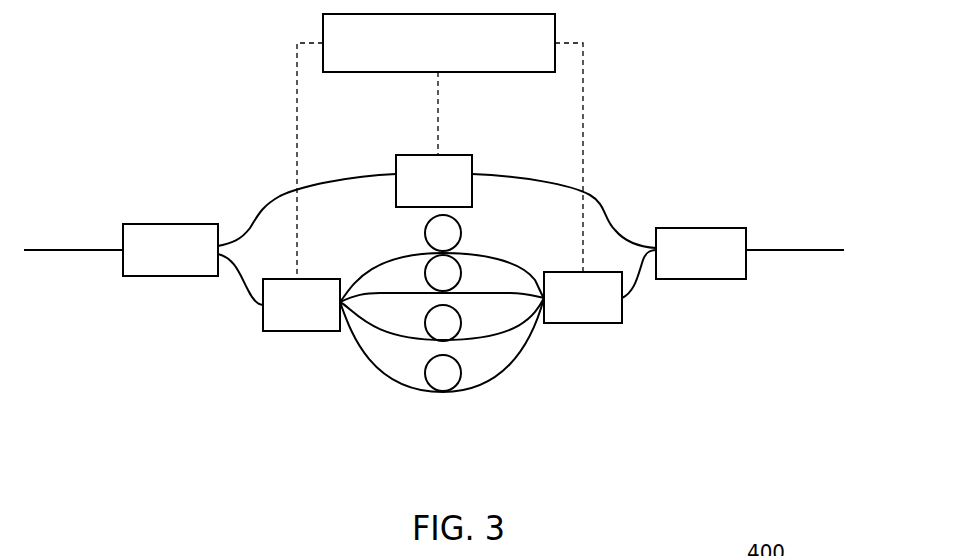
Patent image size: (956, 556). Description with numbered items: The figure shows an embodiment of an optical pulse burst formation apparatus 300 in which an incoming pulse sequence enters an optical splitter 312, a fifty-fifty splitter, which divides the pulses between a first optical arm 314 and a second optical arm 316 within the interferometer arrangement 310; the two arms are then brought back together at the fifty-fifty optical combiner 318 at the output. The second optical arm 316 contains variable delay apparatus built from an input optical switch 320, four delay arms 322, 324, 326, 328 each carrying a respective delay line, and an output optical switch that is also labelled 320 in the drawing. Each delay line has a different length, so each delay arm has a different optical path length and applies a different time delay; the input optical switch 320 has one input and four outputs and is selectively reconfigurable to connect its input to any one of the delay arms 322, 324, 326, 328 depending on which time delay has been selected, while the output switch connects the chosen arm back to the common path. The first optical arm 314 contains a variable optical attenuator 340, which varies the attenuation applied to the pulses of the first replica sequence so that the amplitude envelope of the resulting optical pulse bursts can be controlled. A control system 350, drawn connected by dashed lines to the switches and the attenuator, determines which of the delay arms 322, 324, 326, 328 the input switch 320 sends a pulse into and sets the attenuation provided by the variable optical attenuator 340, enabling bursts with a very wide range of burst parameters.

The optical pulse burst formation apparatus 300 is at (196, 392).
The interferometer 310 is at (228, 155).
The optical splitter 312 is at (154, 276).
The first optical arm 314 is at (505, 166).
The second optical arm 316 is at (362, 414).
The second 50:50 coupler 318 is at (693, 271).
The input optical switch 320 is at (283, 319).
The delay arm 322 is at (490, 253).
The delay arm 324 is at (395, 292).
The delay arm 326 is at (492, 341).
The delay arm 328 is at (478, 394).
The variable optical attenuator 340 is at (454, 176).
The control system 350 is at (440, 146).